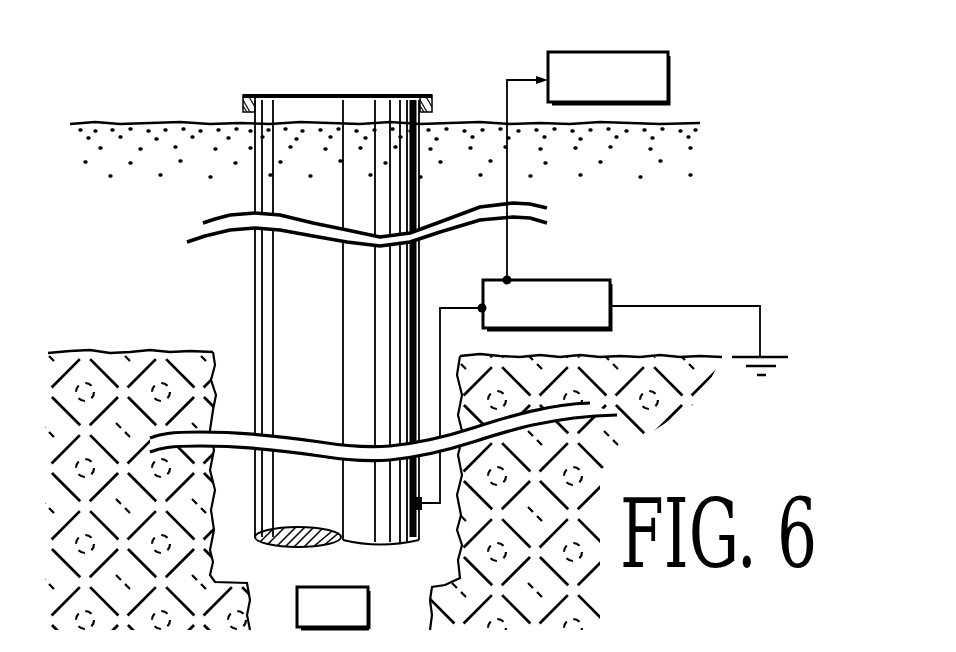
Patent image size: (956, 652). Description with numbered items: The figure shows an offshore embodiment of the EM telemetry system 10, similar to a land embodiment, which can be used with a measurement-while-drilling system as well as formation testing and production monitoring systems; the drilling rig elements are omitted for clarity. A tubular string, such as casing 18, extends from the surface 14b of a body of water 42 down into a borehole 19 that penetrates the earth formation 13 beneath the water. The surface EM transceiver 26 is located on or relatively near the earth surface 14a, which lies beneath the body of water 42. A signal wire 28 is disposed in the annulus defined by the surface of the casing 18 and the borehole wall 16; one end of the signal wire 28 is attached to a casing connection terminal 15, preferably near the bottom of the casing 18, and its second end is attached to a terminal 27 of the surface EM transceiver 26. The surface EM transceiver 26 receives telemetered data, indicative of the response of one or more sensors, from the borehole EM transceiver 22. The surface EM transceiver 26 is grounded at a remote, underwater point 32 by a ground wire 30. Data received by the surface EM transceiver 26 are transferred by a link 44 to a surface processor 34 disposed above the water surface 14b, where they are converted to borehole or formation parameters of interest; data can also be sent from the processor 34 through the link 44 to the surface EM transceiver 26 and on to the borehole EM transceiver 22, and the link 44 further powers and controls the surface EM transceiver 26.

The EM telemetry system 10 is at (456, 70).
The earth formation 13 is at (158, 408).
The surface 14a is at (137, 352).
The surface of the water body 14b is at (190, 123).
The casing connection terminal 15 is at (423, 511).
The borehole wall 16 is at (186, 506).
The casing 18 is at (264, 278).
The borehole 19 is at (230, 531).
The borehole EM transceiver 22 is at (360, 592).
The surface EM transceiver 26 is at (598, 280).
The terminal 27 is at (480, 306).
The signal wire 28 is at (443, 395).
The ground wire 30 is at (700, 306).
The remote, underwater point 32 is at (770, 351).
The surface processor 34 is at (664, 66).
The body of water 42 is at (170, 199).
The link 44 is at (506, 182).